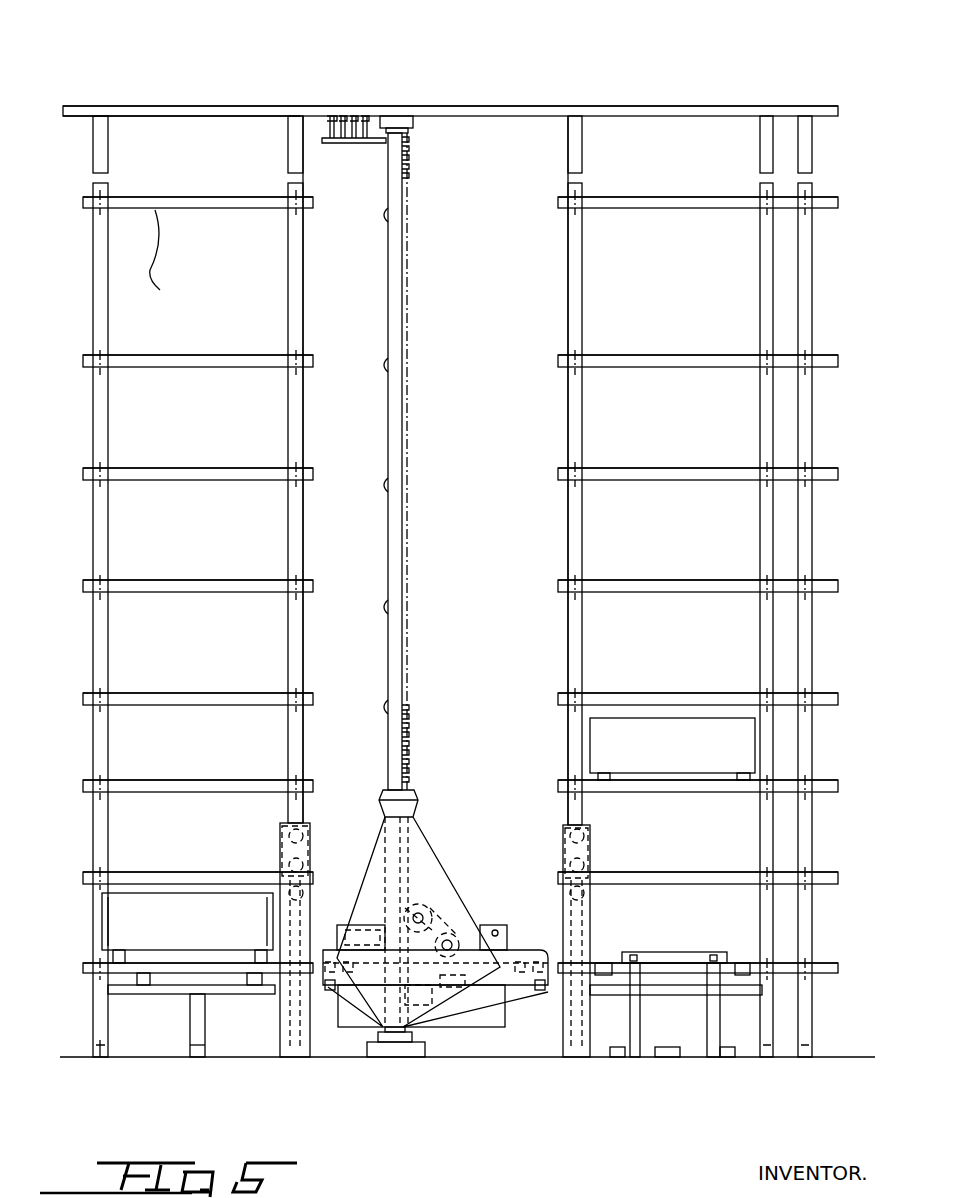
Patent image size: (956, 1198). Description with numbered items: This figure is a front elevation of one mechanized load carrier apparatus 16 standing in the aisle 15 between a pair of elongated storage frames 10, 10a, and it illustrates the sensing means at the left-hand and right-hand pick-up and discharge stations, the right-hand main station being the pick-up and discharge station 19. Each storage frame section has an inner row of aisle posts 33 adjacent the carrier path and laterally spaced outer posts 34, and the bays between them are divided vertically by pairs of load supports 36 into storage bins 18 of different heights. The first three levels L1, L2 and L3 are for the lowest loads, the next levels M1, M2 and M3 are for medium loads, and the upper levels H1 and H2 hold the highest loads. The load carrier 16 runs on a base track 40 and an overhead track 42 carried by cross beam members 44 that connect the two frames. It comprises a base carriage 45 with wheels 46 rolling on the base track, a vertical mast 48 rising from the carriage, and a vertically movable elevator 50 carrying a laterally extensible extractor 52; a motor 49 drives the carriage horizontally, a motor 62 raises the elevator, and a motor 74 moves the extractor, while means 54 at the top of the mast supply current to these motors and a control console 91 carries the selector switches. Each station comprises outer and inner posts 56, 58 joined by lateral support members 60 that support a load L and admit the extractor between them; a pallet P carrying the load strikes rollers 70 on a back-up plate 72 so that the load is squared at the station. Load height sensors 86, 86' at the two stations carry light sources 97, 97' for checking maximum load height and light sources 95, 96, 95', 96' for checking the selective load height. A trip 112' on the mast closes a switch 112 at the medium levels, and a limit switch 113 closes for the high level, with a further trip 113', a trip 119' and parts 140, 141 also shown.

The storage frame 10 is at (672, 100).
The storage frame 10a is at (181, 105).
The aisle 15 is at (497, 195).
The mechanized load carrier apparatus 16 is at (432, 837).
The storage bins 18 is at (206, 250).
The pick-up and discharge station 19 is at (740, 960).
The aisle posts 33 is at (303, 222).
The outer posts 34 is at (108, 147).
The load supports 36 is at (155, 355).
The base track 40 is at (400, 1057).
The overhead track 42 is at (422, 453).
The cross beam members 44 is at (476, 106).
The base carriage 45 is at (430, 870).
The wheels 46 is at (388, 1040).
The vertical mast 48 is at (398, 724).
The motor 49 is at (420, 1000).
The vertically movable elevator 50 is at (518, 950).
The extractor 52 is at (520, 972).
The current supply means 54 is at (351, 143).
The outer posts 56 is at (101, 1057).
The inner posts 58 is at (297, 1050).
The lateral support members 60 is at (598, 963).
The motor 62 is at (448, 930).
The rollers 70 is at (638, 955).
The back-up plate 72 is at (670, 952).
The motor 74 is at (455, 985).
The load height sensor 86 is at (321, 819).
The load height sensor 86' is at (551, 808).
The control console 91 is at (412, 793).
The light source 95 is at (606, 898).
The light source 96 is at (606, 849).
The light source 97 is at (606, 820).
The light source 95' is at (258, 903).
The light source 96' is at (260, 856).
The light source 97' is at (260, 830).
The switch 112 is at (357, 896).
The limit switch 113 is at (349, 919).
The trip 112' is at (355, 596).
The mast actuator tab 113' is at (353, 235).
The mast actuator tab 119' is at (354, 390).
The hook 140 is at (545, 990).
The hook 141 is at (328, 988).
The level H1 is at (138, 355).
The level H2 is at (119, 196).
The fourth level M1 is at (135, 694).
The fifth level M2 is at (135, 580).
The sixth level M3 is at (128, 467).
The first level L1 is at (135, 963).
The second level L2 is at (126, 872).
The third level L3 is at (135, 781).
The load L is at (690, 686).
The pallet P is at (708, 772).